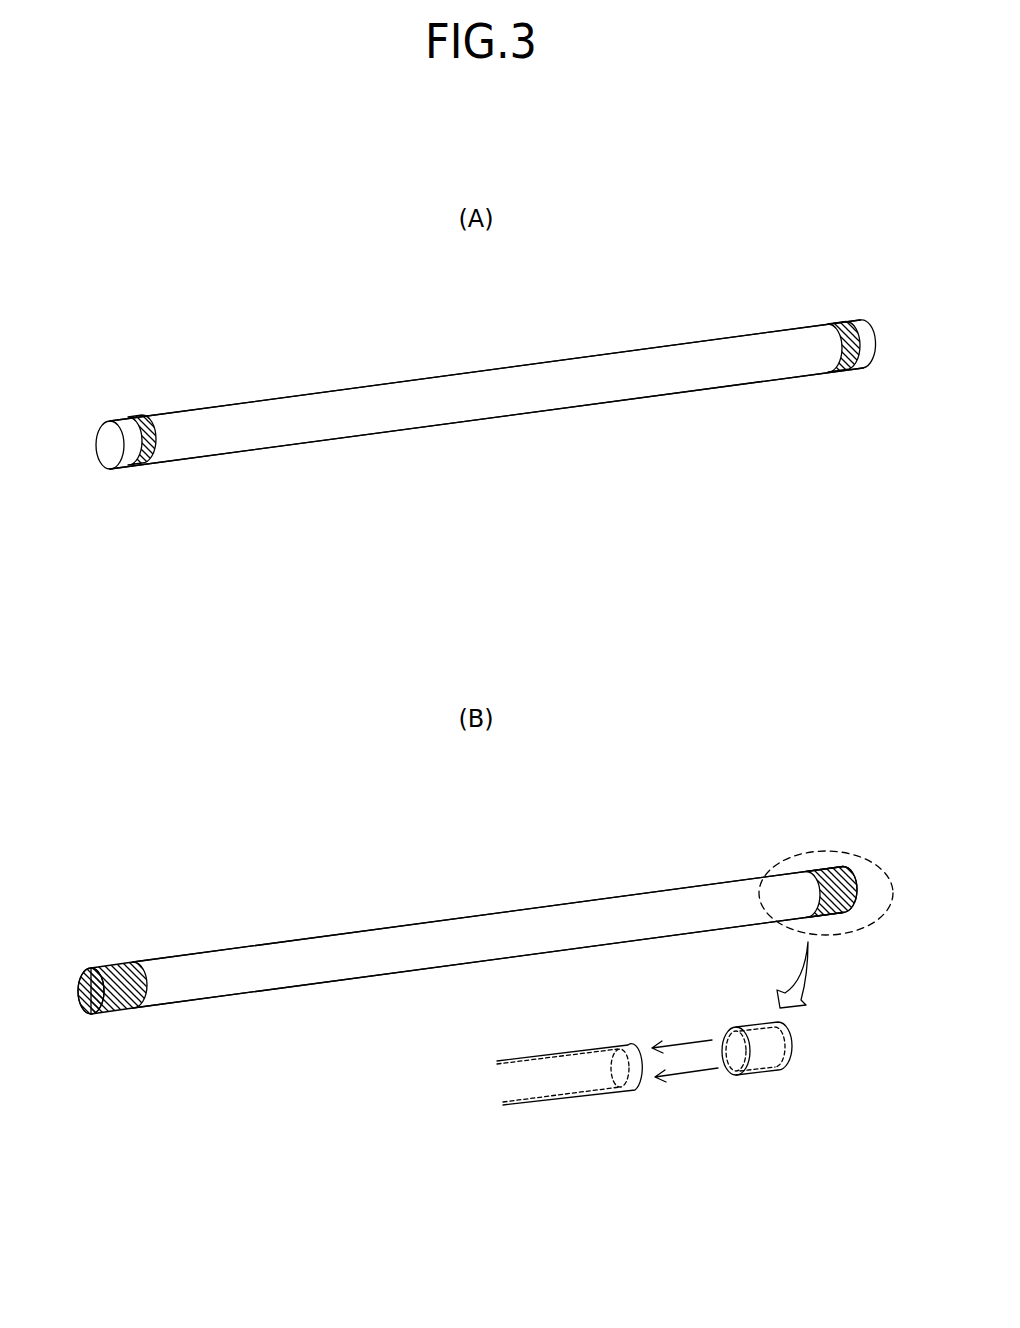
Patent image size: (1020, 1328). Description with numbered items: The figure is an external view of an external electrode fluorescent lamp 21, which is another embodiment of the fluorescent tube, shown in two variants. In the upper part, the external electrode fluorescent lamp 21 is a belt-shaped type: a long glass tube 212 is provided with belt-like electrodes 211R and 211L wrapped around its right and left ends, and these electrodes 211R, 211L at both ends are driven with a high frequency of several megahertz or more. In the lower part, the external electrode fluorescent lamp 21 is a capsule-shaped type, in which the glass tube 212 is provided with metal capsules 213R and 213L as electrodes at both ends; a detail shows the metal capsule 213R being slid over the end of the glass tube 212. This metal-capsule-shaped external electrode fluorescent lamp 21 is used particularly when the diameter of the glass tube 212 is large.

The external electrode fluorescent lamp 21 is at (672, 425).
The glass tube 212 is at (300, 396).
The electrode 211L is at (140, 419).
The electrode 211R is at (838, 321).
The metal capsule 213L is at (116, 967).
The metal capsule 213R is at (822, 869).